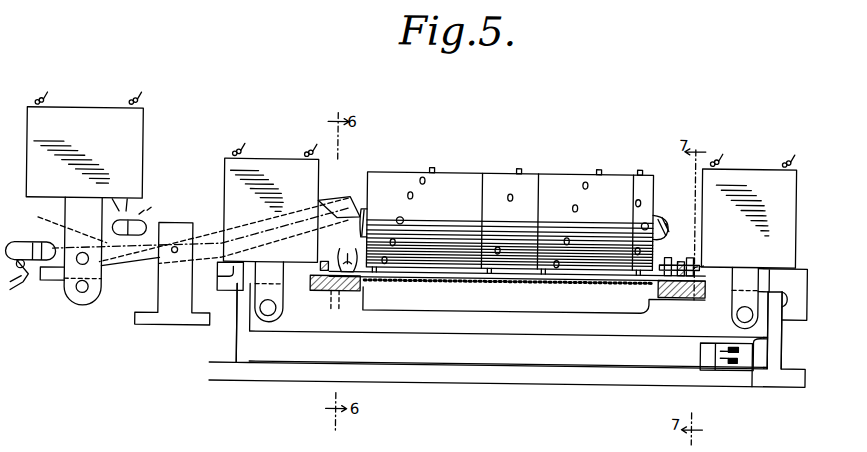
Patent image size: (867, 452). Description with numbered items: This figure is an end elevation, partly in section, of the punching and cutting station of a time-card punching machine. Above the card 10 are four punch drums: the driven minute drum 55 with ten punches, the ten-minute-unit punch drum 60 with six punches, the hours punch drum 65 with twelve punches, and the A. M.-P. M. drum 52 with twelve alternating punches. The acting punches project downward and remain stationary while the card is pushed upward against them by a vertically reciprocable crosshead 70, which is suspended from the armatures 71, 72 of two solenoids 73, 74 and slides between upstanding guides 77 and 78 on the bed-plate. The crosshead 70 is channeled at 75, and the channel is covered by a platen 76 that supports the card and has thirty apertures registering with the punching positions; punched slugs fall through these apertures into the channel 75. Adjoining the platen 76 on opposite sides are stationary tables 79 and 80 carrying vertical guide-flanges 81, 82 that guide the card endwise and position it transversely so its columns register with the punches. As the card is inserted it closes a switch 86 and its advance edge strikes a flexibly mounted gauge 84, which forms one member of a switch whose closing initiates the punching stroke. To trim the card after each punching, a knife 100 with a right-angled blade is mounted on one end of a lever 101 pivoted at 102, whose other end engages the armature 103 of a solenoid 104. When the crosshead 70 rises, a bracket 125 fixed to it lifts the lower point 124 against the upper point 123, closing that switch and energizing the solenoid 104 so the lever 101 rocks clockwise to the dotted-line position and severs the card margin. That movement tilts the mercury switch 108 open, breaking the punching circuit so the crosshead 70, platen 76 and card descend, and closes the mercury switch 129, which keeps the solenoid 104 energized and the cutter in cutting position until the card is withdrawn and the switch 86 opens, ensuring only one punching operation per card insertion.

The card 10 is at (479, 277).
The A. M.-P. M. drum 52 is at (643, 177).
The driven minute drum 55 is at (600, 177).
The 10-minute-unit punch drum 60 is at (521, 174).
The hours punch drum 65 is at (451, 174).
The crosshead 70 is at (492, 331).
The armature 71 is at (274, 282).
The armature 72 is at (742, 270).
The solenoid 73 is at (278, 164).
The solenoid 74 is at (733, 162).
The channel 75 is at (592, 298).
The platen 76 is at (579, 281).
The upstanding guide 77 is at (239, 333).
The upstanding guide 78 is at (781, 325).
The stationary table 79 is at (332, 294).
The stationary table 80 is at (704, 293).
The vertical guide-flange 81 is at (323, 258).
The vertical guide-flange 82 is at (681, 256).
The gauge 84 is at (346, 252).
The switch 86 is at (672, 293).
The knife 100 is at (350, 195).
The lever 101 is at (203, 233).
The pivot 102 is at (171, 261).
The armature 103 is at (81, 300).
The solenoid 104 is at (94, 114).
The mercury switch 108 is at (20, 247).
The upper point 123 is at (724, 326).
The lower point 124 is at (727, 357).
The bracket 125 is at (755, 383).
The mercury switch 129 is at (136, 218).